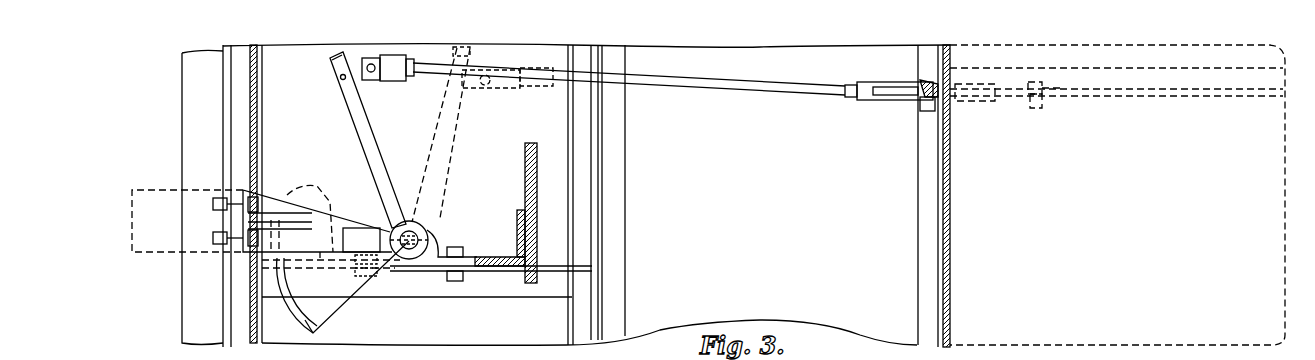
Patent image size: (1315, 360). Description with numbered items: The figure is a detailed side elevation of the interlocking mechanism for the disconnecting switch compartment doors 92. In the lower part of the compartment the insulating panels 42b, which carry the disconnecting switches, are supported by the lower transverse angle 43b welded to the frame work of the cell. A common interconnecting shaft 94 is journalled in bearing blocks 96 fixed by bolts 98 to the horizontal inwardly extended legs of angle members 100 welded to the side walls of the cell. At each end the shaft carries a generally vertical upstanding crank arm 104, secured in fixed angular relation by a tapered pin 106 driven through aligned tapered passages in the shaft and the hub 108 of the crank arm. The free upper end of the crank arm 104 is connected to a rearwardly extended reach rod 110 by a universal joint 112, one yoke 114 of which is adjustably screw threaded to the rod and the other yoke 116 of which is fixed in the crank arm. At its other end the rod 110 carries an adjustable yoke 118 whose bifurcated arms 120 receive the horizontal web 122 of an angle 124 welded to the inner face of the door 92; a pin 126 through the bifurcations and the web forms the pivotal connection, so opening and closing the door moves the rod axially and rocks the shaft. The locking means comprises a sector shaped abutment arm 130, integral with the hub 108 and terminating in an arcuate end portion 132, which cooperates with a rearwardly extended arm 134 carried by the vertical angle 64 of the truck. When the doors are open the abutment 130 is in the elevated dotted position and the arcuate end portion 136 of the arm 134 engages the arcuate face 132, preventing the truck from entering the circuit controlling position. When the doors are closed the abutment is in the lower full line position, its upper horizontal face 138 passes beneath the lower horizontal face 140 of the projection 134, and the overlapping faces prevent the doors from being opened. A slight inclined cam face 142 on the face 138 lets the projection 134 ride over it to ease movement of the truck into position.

The vertical angle 64 is at (193, 140).
The disconnecting switch compartment door 92 is at (950, 184).
The common interconnecting shaft 94 is at (410, 232).
The bearing block 96 is at (429, 223).
The bolt 98 is at (456, 246).
The angle member 100 is at (495, 298).
The crank arm 104 is at (376, 145).
The tapered pin 106 is at (412, 250).
The hub 108 is at (390, 226).
The reach rod 110 is at (714, 92).
The universal joint 112 is at (370, 78).
The yoke 114 is at (397, 80).
The yoke 116 is at (350, 70).
The adjustable yoke 118 is at (866, 100).
The bifurcated arms 120 is at (910, 96).
The horizontal web 122 is at (1103, 98).
The angle 124 is at (950, 82).
The pin 126 is at (926, 86).
The abutment arm 130 is at (344, 307).
The arcuate end portion 132 is at (301, 322).
The rearwardly extended arm 134 is at (331, 186).
The arcuate end portion 136 is at (378, 238).
The upper horizontal face 138 is at (322, 218).
The lower horizontal face 140 is at (322, 259).
The inclined cam face 142 is at (252, 258).
The insulating panel 42b is at (523, 173).
The lower transverse angle 43b is at (497, 256).